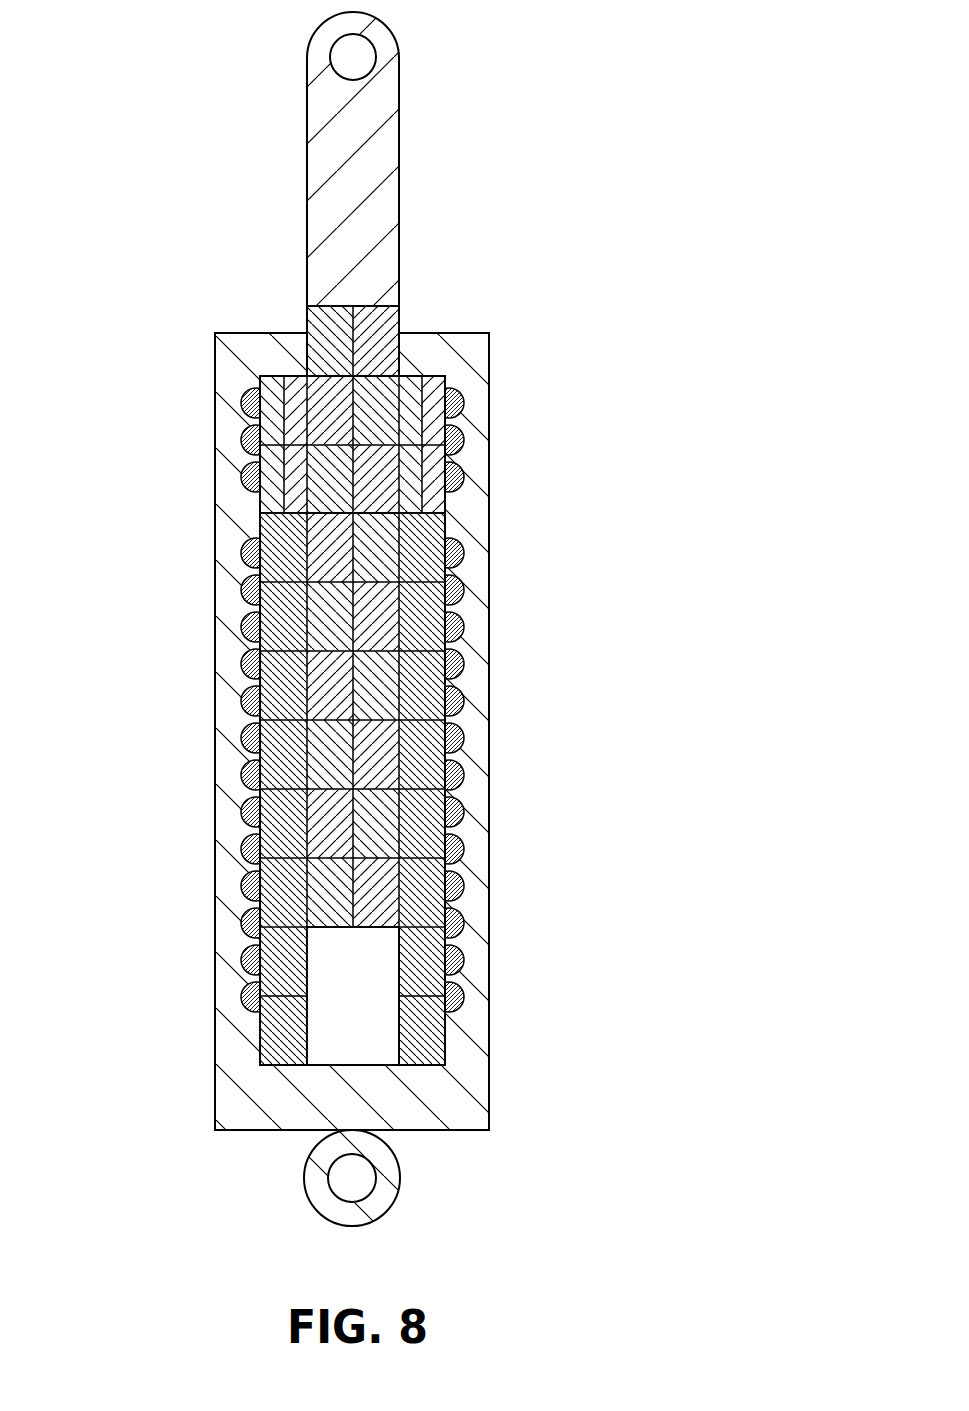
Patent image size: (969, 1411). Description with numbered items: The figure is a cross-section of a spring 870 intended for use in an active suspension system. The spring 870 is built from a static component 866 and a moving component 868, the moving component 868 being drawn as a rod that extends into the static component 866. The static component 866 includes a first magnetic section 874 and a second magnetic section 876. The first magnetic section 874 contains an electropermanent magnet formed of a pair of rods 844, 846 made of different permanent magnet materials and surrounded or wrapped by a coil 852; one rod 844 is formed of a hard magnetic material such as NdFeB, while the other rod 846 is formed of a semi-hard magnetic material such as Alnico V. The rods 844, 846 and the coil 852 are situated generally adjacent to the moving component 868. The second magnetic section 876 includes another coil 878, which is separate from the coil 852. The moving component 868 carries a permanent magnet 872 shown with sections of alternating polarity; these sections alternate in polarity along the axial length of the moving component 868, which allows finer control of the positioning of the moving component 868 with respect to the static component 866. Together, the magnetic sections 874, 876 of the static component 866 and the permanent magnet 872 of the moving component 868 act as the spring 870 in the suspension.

The spring 870 is at (584, 93).
The moving component 868 is at (399, 90).
The permanent magnet 872 is at (397, 304).
The static component 866 is at (472, 333).
The rod 846 is at (298, 373).
The rod 844 is at (272, 375).
The first magnetic section 874 is at (262, 356).
The second magnetic section 876 is at (187, 1022).
The coil 852 is at (462, 476).
The coil 878 is at (462, 848).